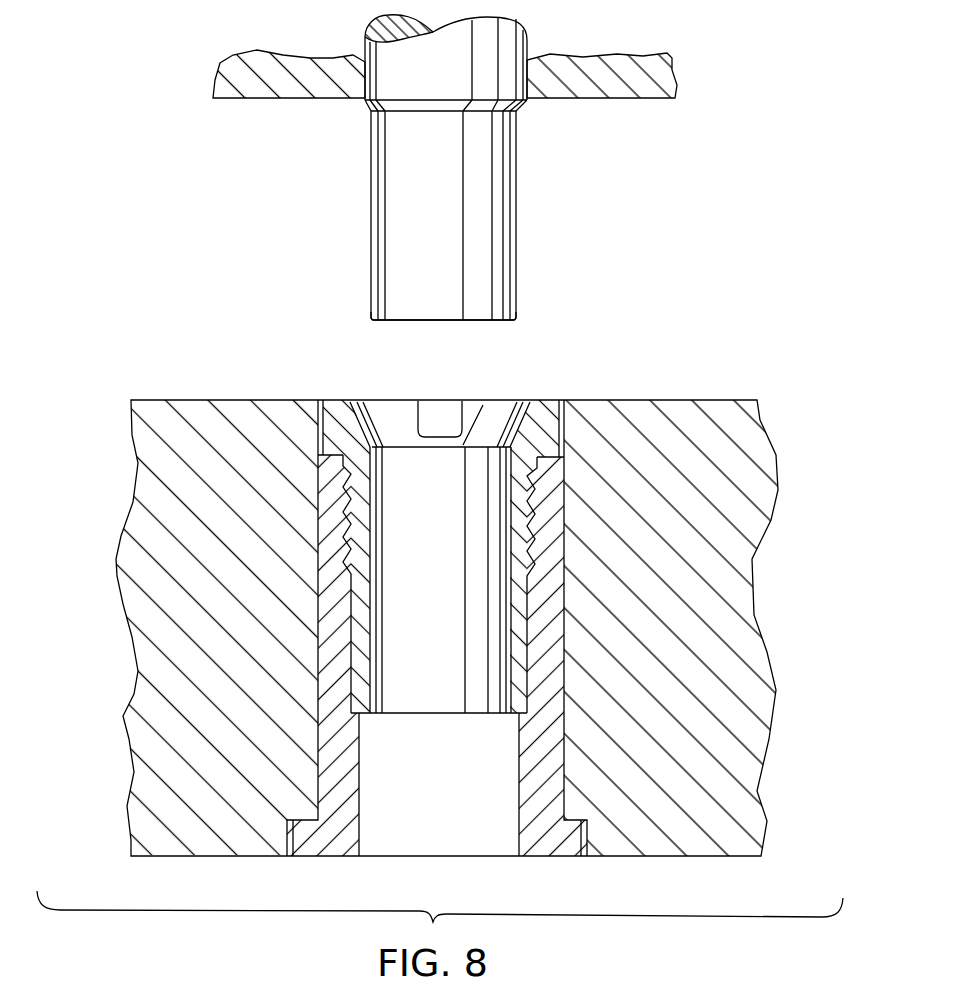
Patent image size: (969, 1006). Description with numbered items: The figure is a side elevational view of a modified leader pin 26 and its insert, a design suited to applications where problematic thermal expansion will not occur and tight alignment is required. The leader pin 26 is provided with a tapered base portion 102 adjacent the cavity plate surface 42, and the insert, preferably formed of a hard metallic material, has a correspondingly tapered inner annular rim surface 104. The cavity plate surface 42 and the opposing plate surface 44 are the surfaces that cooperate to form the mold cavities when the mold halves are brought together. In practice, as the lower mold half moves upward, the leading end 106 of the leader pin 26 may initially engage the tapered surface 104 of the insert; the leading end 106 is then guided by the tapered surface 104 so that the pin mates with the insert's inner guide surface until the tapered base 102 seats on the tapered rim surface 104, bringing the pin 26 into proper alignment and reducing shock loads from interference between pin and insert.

The leader pin 26 is at (497, 242).
The cavity plate surface 42 is at (598, 100).
The plate surface 44 is at (670, 402).
The tapered base portion 102 is at (519, 109).
The tapered inner annular rim surface 104 is at (363, 423).
The leading end 106 is at (485, 323).